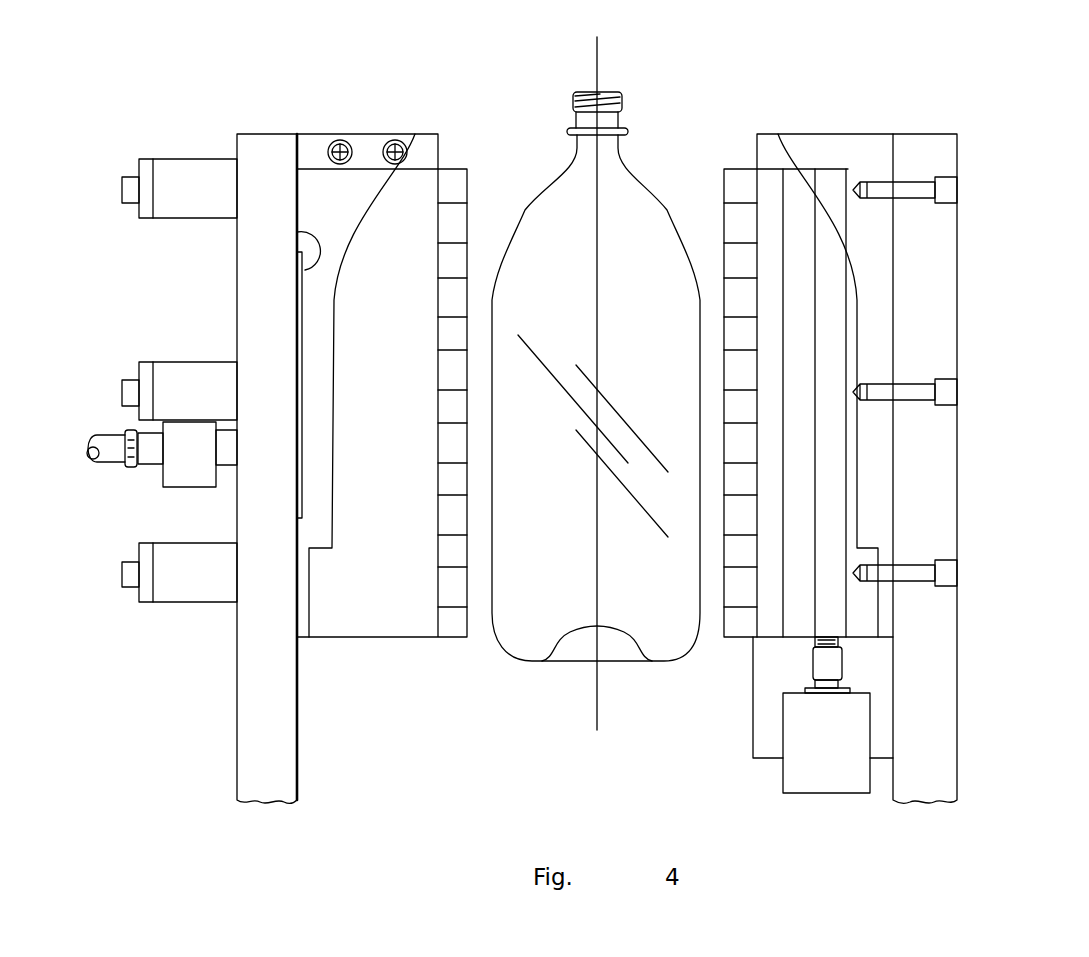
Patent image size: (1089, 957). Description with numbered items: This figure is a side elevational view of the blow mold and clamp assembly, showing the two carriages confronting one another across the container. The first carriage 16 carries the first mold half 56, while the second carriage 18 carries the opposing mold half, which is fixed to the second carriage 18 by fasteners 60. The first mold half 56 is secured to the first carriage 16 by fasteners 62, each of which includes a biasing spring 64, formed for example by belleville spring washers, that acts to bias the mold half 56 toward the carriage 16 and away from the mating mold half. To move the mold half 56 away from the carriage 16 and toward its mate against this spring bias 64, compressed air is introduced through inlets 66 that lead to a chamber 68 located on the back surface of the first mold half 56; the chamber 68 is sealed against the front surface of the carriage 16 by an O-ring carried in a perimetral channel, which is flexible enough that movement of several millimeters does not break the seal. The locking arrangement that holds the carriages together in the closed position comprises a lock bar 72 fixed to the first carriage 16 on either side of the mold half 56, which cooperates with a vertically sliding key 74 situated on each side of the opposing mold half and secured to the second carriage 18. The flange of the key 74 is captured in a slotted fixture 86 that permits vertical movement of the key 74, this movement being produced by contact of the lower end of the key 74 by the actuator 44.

The first carriage 16 is at (266, 150).
The second carriage 18 is at (929, 150).
The actuator 44 is at (925, 785).
The first mold half 56 is at (365, 188).
The fasteners 60 is at (957, 190).
The fasteners 62 is at (128, 188).
The biasing spring 64 is at (190, 178).
The inlets 66 is at (180, 472).
The chamber 68 is at (297, 232).
The lock bar 72 is at (402, 620).
The vertically sliding key 74 is at (760, 617).
The slotted fixture 86 is at (878, 322).